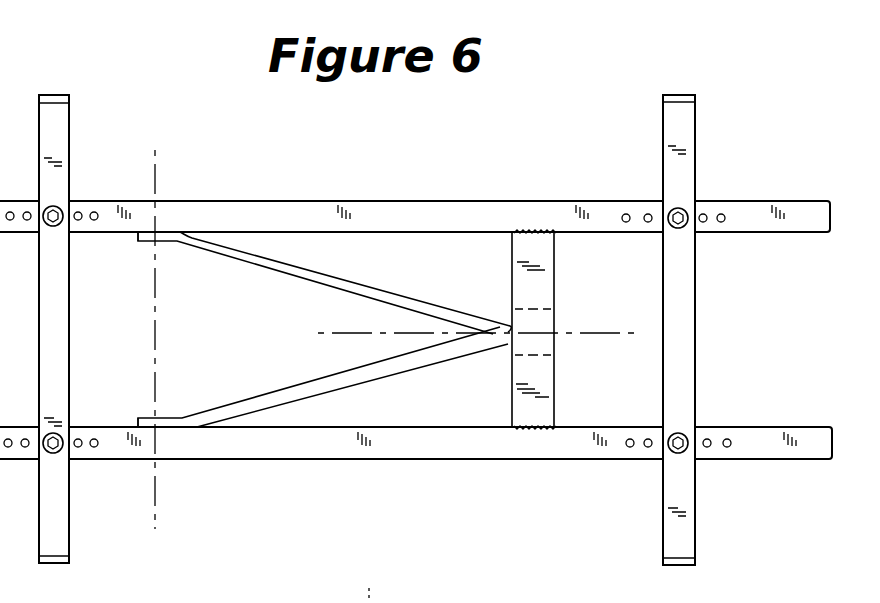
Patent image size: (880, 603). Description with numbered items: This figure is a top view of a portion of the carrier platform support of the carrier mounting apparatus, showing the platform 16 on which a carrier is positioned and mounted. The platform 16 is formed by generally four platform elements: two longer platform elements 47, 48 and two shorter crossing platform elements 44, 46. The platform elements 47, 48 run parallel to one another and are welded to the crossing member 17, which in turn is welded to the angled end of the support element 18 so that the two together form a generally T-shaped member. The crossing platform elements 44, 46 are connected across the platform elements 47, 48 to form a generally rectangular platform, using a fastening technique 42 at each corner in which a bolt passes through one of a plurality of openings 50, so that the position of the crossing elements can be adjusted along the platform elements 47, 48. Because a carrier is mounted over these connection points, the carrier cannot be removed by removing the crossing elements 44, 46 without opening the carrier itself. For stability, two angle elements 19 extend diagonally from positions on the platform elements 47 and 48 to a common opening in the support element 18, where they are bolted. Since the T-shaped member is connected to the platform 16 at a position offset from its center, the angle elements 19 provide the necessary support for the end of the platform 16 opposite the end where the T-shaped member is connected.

The platform 16 is at (416, 346).
The crossing member 17 is at (555, 277).
The support element 18 is at (540, 330).
The angle element 19 is at (385, 290).
The fastening technique 42 is at (80, 415).
The crossing platform element 44 is at (697, 297).
The crossing platform element 46 is at (57, 142).
The platform element 47 is at (305, 460).
The platform element 48 is at (330, 201).
The openings 50 is at (78, 208).